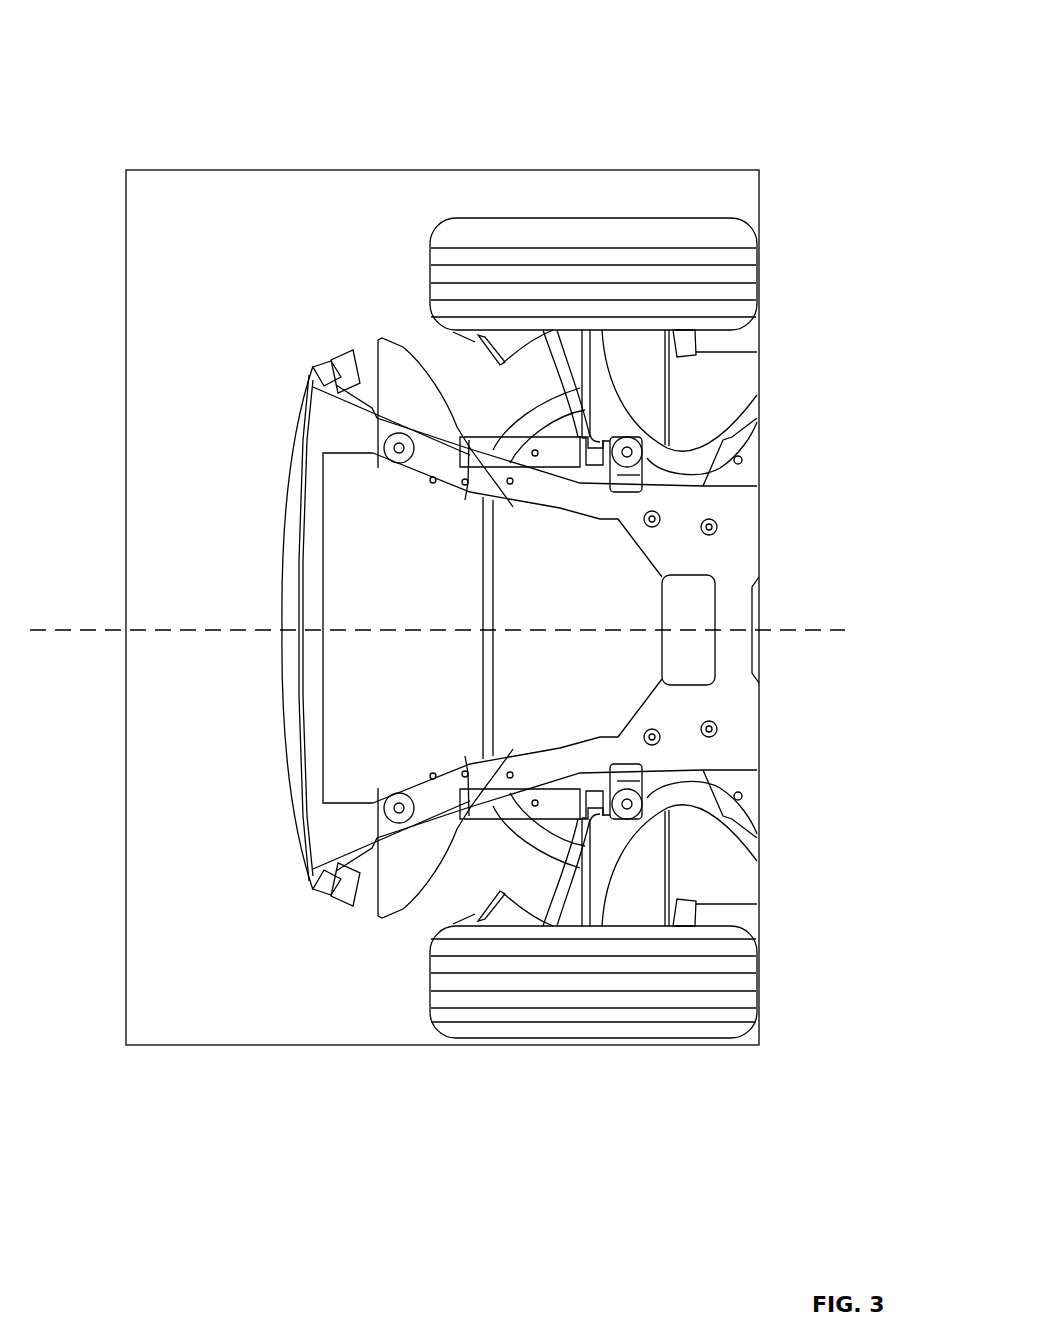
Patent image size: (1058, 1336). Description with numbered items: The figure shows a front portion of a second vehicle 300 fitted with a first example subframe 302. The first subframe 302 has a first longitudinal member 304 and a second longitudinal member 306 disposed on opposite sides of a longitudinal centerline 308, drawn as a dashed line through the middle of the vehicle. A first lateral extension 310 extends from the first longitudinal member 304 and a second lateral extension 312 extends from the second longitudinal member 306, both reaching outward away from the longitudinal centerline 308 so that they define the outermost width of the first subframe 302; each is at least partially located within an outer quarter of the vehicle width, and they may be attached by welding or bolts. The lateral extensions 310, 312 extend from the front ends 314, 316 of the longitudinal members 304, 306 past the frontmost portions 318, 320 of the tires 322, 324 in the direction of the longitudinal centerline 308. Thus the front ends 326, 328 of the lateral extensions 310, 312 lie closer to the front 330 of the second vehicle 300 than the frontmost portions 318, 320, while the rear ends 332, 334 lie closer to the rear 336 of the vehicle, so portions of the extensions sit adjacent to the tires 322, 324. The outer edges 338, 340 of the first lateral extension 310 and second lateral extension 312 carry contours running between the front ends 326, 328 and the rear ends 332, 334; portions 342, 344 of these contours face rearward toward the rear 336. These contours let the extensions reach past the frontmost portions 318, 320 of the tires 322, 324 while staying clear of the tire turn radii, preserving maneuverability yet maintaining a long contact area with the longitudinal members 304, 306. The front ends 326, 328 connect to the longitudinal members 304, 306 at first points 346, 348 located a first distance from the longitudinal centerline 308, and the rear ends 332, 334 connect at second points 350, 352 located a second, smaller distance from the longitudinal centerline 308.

The second vehicle 300 is at (740, 45).
The first subframe 302 is at (665, 535).
The first longitudinal member 304 is at (600, 516).
The second longitudinal member 306 is at (535, 745).
The longitudinal centerline 308 is at (795, 628).
The first lateral extension 310 is at (437, 420).
The second lateral extension 312 is at (397, 895).
The front end of first longitudinal member 314 is at (377, 448).
The front end of second longitudinal member 316 is at (377, 800).
The frontmost portion of first tire 318 is at (430, 260).
The frontmost portion of second tire 320 is at (430, 997).
The first tire 322 is at (610, 217).
The second tire 324 is at (613, 1038).
The front end of first lateral extension 326 is at (377, 352).
The front end of second lateral extension 328 is at (343, 907).
The front of vehicle 330 is at (283, 608).
The rear end of first lateral extension 332 is at (510, 486).
The rear end of second lateral extension 334 is at (507, 775).
The rear of vehicle 336 is at (832, 499).
The outer edge of first lateral extension 338 is at (410, 357).
The outer edge of second lateral extension 340 is at (390, 920).
The rearward facing portion of first contour 342 is at (453, 415).
The rearward facing portion of second contour 344 is at (458, 832).
The first point of first lateral extension 346 is at (320, 385).
The first point of second lateral extension 348 is at (377, 840).
The second point of first lateral extension 350 is at (465, 500).
The second point of second lateral extension 352 is at (442, 785).